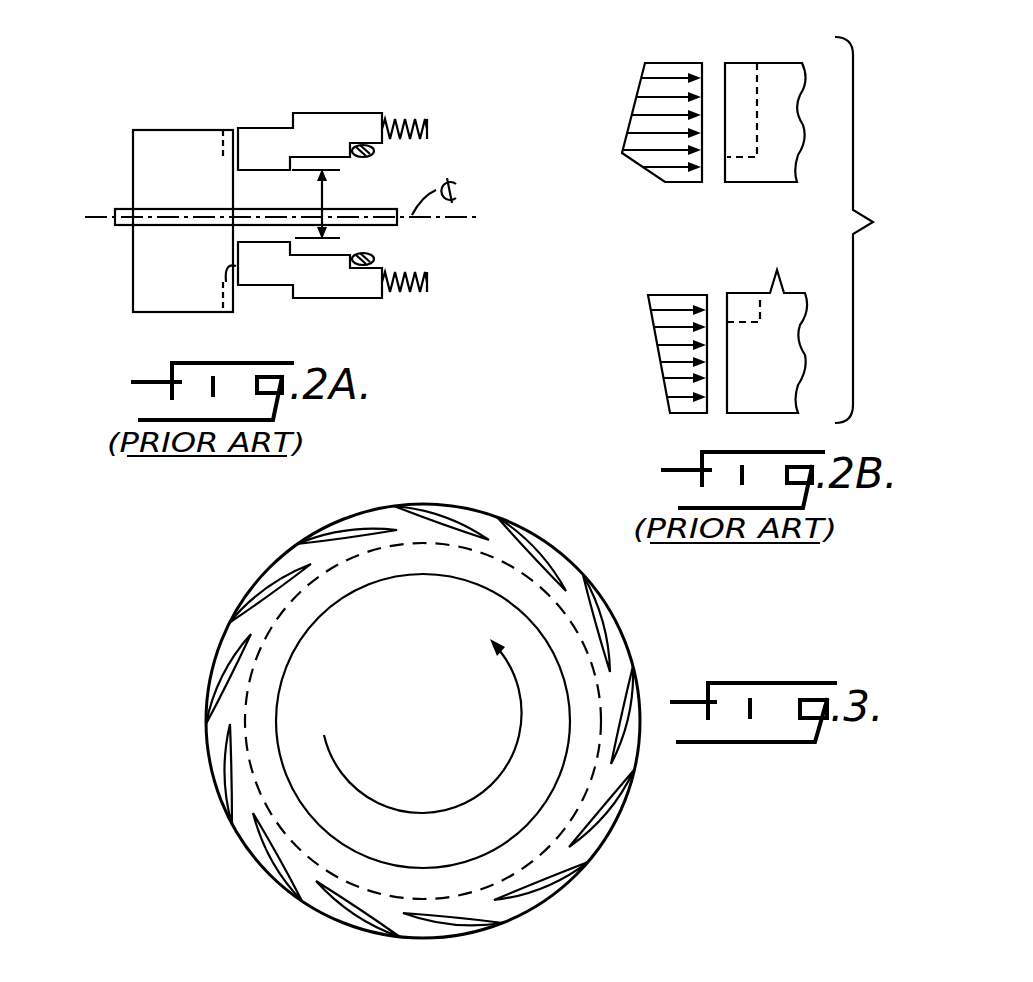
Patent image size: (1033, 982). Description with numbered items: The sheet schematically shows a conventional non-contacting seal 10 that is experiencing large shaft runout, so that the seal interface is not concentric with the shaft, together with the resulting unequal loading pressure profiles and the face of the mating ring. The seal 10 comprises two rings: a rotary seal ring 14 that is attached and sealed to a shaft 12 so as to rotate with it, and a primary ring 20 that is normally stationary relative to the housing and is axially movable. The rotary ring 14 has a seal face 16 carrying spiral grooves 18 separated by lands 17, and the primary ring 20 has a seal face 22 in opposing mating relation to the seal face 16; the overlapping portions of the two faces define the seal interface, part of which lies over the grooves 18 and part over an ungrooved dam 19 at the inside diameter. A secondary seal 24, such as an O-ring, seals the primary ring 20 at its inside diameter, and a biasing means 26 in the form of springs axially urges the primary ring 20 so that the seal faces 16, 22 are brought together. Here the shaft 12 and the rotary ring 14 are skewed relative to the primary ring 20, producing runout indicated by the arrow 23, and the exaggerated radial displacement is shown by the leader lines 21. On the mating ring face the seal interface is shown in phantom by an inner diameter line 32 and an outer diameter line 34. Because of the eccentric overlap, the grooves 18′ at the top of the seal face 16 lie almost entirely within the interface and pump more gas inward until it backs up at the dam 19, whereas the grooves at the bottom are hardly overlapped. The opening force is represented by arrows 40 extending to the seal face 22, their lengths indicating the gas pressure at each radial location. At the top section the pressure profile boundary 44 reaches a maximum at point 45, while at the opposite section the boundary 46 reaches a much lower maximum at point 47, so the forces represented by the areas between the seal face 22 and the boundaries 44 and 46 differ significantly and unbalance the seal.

In FIG. 2A, the seal 10 is at (166, 118).
In FIG. 2A, the shaft 12 is at (123, 208).
In FIG. 3, the shaft 12 is at (305, 688).
In FIG. 2A, the rotary seal ring 14 is at (140, 270).
In FIG. 2B, the rotary seal ring 14 is at (803, 117).
In FIG. 3, the rotary seal ring 14 is at (323, 520).
In FIG. 2A, the seal face 16 is at (240, 187).
In FIG. 3, the seal face 16 is at (465, 880).
In FIG. 3, the lands 17 is at (253, 608).
In FIG. 2A, the spiral grooves 18 is at (229, 128).
In FIG. 3, the spiral grooves 18 is at (227, 872).
In FIG. 2B, the grooves 18′ is at (738, 87).
In FIG. 3, the grooves 18′ is at (497, 545).
In FIG. 2B, the dam 19 is at (722, 170).
In FIG. 3, the dam 19 is at (467, 553).
In FIG. 2A, the primary ring 20 is at (333, 118).
In FIG. 2A, the leader lines 21 is at (325, 216).
In FIG. 2A, the seal face 22 is at (232, 290).
In FIG. 2B, the seal face 22 is at (704, 68).
In FIG. 3, the arrow 23 is at (527, 715).
In FIG. 2A, the secondary seal 24 is at (374, 150).
In FIG. 2A, the biasing means 26 is at (427, 125).
In FIG. 3, the inner diameter line 32 is at (538, 855).
In FIG. 3, the outer diameter line 34 is at (587, 843).
In FIG. 2B, the arrows 40 is at (652, 152).
In FIG. 2B, the pressure profile boundary 44 is at (642, 78).
In FIG. 2B, the point 45 is at (622, 155).
In FIG. 2B, the boundary 46 is at (648, 297).
In FIG. 2B, the point 47 is at (645, 323).